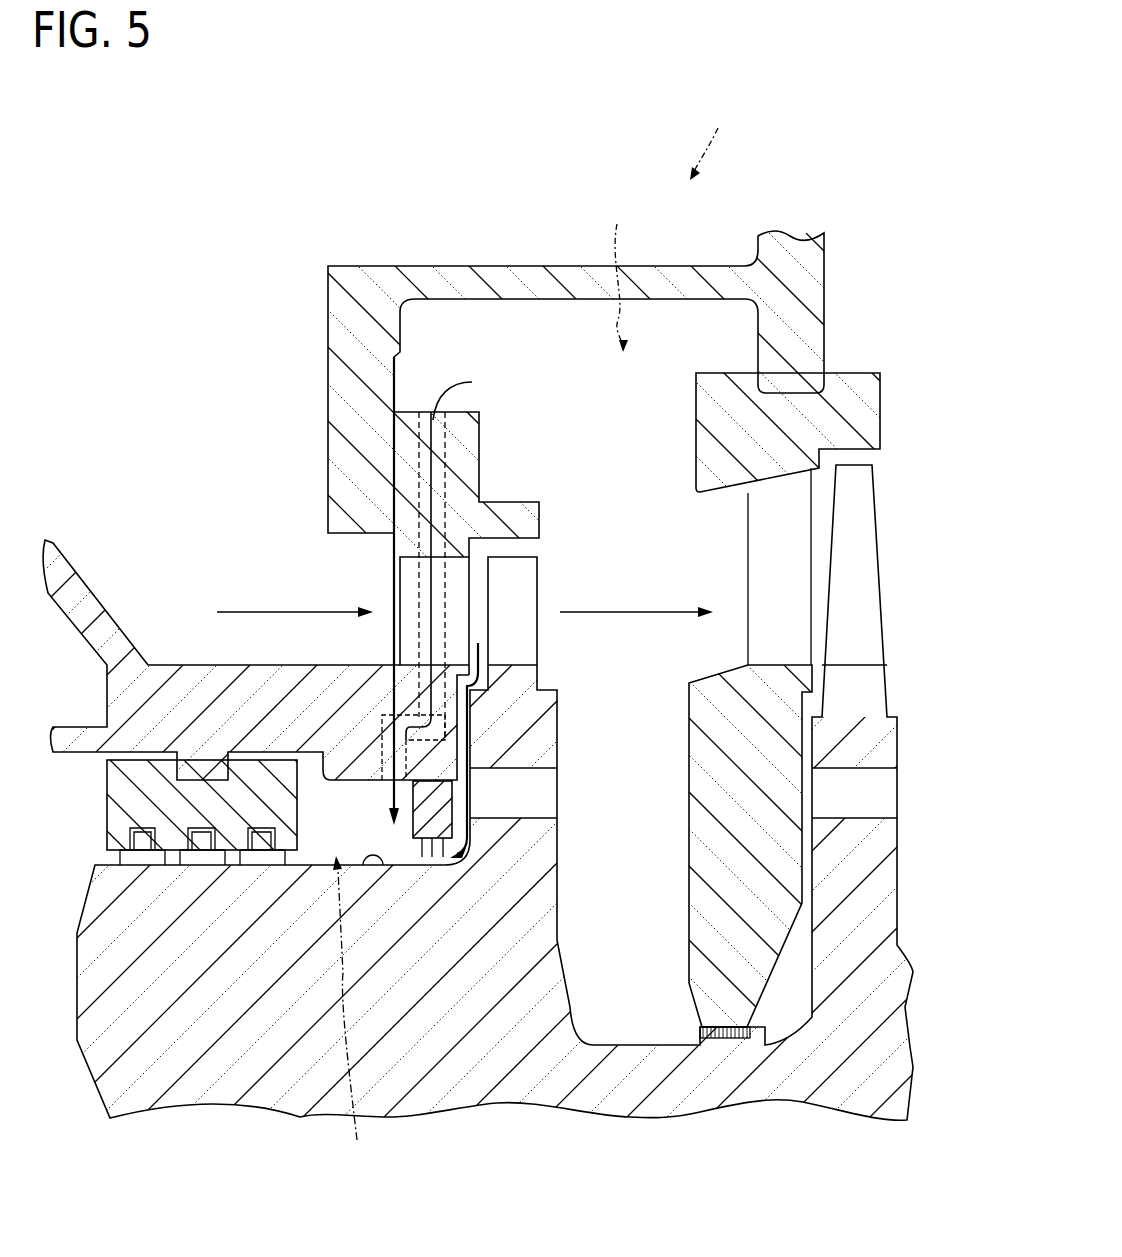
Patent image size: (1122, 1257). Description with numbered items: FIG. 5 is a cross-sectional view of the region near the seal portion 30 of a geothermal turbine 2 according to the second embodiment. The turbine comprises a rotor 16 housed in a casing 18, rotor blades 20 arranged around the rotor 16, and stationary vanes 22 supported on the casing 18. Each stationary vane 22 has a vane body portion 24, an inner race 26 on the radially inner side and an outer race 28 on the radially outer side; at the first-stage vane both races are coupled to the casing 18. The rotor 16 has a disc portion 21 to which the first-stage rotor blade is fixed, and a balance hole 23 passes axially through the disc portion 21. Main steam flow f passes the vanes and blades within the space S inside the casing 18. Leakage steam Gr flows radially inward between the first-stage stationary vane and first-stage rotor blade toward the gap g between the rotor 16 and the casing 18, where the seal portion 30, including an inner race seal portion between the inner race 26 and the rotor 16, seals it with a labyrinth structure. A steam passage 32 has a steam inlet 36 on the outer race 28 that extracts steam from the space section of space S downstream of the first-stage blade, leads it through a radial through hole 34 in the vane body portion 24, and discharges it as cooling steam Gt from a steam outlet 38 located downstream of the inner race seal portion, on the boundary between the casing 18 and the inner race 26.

The geothermal turbine 2 is at (719, 140).
The casing 18 is at (543, 266).
The space S is at (614, 275).
The outer race 28 is at (481, 425).
The steam inlet 36 is at (431, 412).
The steam passage 32 is at (447, 455).
The vane body portion 24 is at (394, 575).
The through hole 34 is at (447, 580).
The rotor blade 20 is at (880, 570).
The stationary vane 22 is at (400, 643).
The inner race 26 is at (400, 683).
The steam outlet 38 is at (383, 752).
The disc portion 21 is at (555, 733).
The balance hole 23 is at (548, 782).
The cooling steam Gt is at (392, 812).
The leakage steam Gr is at (472, 835).
The rotor 16 is at (902, 952).
The seal portion 30 is at (307, 868).
The gap g is at (350, 1013).
The main gas flow f is at (291, 608).